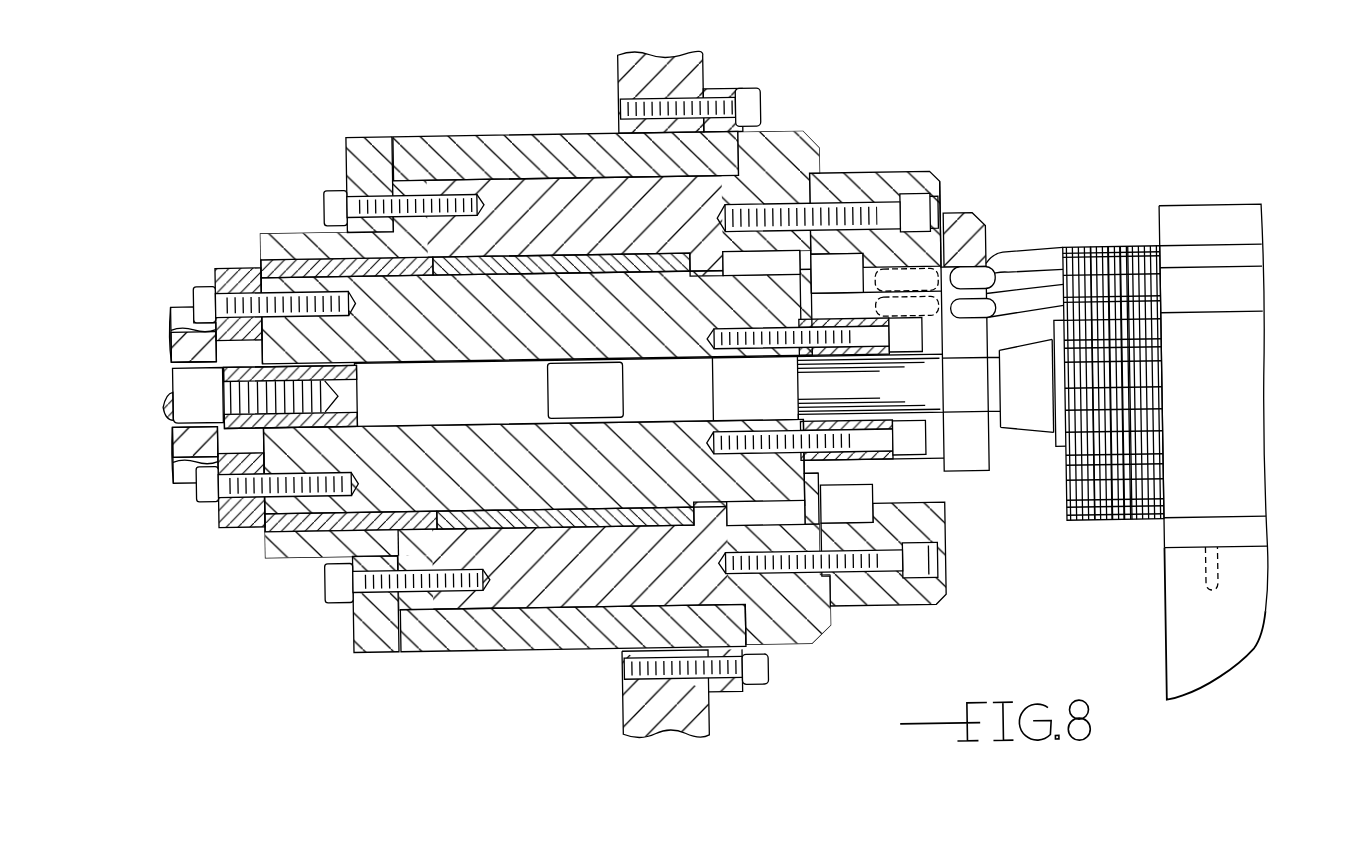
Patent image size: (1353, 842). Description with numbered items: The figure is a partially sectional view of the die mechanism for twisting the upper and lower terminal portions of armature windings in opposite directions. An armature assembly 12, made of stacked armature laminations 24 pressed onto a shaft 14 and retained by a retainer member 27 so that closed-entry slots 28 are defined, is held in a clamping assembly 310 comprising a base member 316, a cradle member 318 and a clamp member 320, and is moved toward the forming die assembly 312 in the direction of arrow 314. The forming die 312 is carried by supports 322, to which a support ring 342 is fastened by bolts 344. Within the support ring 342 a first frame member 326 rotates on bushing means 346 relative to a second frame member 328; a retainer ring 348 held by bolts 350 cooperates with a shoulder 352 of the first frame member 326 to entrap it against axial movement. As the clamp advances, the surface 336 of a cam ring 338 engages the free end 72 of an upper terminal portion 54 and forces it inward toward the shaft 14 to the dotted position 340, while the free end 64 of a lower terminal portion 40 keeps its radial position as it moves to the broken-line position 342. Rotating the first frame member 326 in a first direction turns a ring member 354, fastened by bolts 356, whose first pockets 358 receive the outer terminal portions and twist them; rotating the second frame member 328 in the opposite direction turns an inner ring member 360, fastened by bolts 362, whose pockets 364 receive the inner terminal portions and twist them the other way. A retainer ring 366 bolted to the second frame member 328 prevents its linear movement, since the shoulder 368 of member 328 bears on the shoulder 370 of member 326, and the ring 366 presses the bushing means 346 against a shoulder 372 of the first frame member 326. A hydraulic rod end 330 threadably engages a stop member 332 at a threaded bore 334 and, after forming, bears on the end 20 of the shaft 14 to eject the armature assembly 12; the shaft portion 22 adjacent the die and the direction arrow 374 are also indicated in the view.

The armature assembly 12 is at (1077, 250).
The shaft 14 is at (975, 425).
The end of shaft 20 is at (740, 393).
The shaft end 22 is at (922, 392).
The armature laminations 24 is at (1110, 256).
The retainer member 27 is at (1060, 454).
The slots 28 is at (1130, 307).
The lower terminal portion 40 is at (1018, 309).
The upper terminal portion 54 is at (1013, 262).
The free end 64 is at (968, 322).
The free end 72 is at (967, 277).
The clamping assembly 310 is at (1213, 208).
The forming die assembly 312 is at (803, 96).
The arrow 314 is at (895, 111).
The base member 316 is at (1240, 620).
The cradle member 318 is at (1235, 453).
The clamp member 320 is at (1237, 301).
The supports 322 is at (630, 72).
The first frame member 326 is at (533, 188).
The second frame member 328 is at (567, 299).
The rod end 330 is at (175, 415).
The stop member 332 is at (488, 385).
The threaded bore 334 is at (358, 382).
The surface 336 is at (980, 252).
The cam ring 338 is at (948, 215).
The position 340 is at (882, 282).
The support ring 342 is at (520, 147).
The bolts 344 is at (765, 101).
The bushing means 346 is at (347, 518).
The retainer ring 348 is at (347, 146).
The bolts 350 is at (343, 585).
The shoulder 352 is at (745, 636).
The ring member 354 is at (880, 600).
The bolts 356 is at (940, 217).
The first pockets 358 is at (893, 250).
The inner ring member 360 is at (800, 329).
The bolts 362 is at (713, 336).
The pockets 364 is at (826, 299).
The retainer ring 366 is at (237, 506).
The shoulder 368 is at (733, 268).
The shoulder 370 is at (723, 258).
The shoulder 372 is at (693, 248).
The direction of movement 374 is at (895, 78).